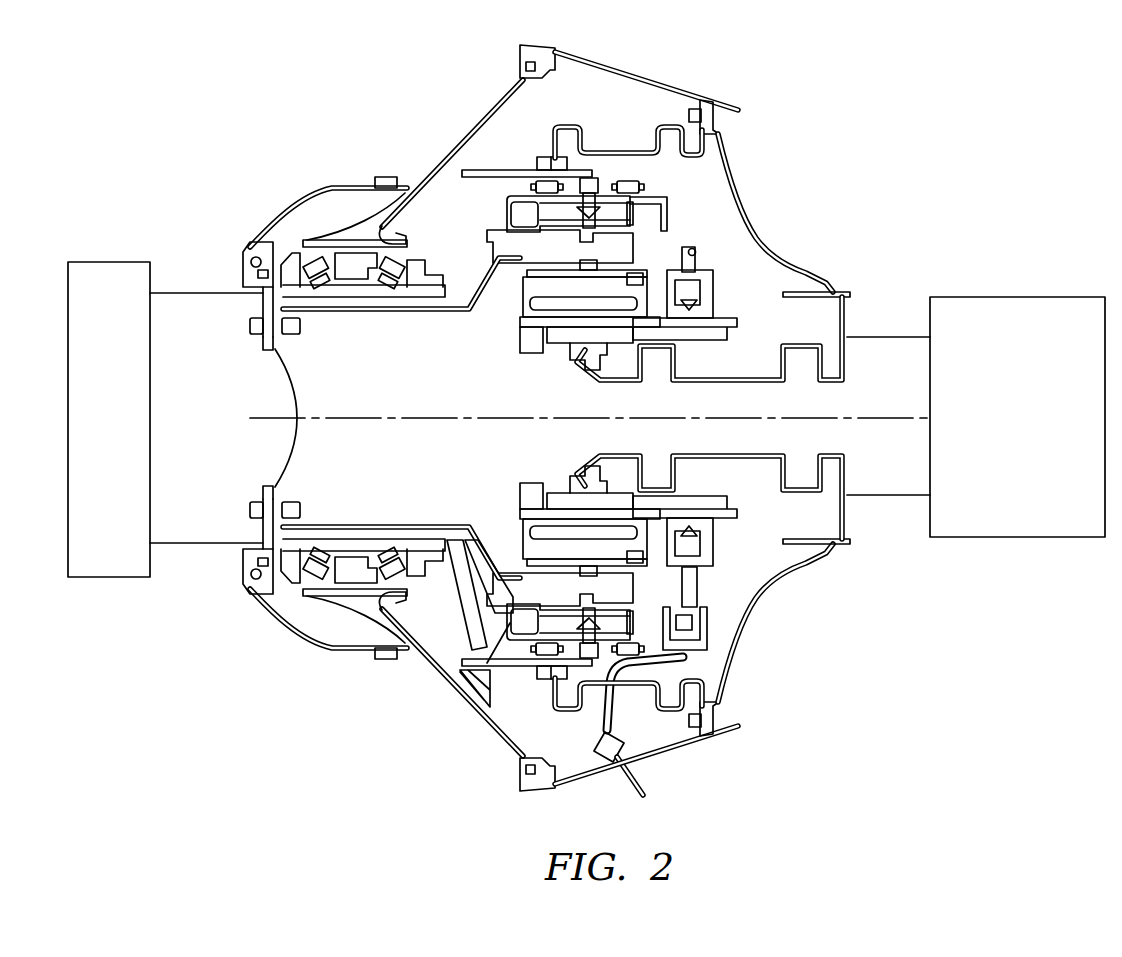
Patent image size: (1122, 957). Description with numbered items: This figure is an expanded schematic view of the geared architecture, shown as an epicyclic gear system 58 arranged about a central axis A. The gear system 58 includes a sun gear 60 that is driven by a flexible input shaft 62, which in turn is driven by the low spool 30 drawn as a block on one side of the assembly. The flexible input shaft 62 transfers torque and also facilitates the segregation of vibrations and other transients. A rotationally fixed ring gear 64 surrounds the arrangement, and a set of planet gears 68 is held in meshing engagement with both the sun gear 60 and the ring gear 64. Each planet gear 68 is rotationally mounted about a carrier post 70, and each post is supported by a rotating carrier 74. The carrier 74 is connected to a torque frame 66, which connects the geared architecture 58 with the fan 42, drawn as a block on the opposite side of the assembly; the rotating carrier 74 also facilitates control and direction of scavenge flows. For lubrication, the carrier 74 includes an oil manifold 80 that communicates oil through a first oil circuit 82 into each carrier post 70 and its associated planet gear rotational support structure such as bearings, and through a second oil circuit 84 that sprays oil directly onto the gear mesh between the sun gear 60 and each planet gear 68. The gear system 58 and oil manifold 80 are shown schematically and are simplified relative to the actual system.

The low spool 30 is at (1034, 437).
The fan 42 is at (120, 429).
The epicyclic gear system 58 is at (871, 149).
The sun gear 60 is at (560, 505).
The flexible input shaft 62 is at (742, 382).
The ring gear 64 is at (636, 204).
The torque frame 66 is at (438, 310).
The planet gear 68 is at (545, 512).
The carrier post 70 is at (512, 566).
The rotating carrier 74 is at (472, 678).
The oil manifold 80 is at (741, 540).
The first oil circuit 82 is at (647, 530).
The second oil circuit 84 is at (653, 316).
The rotation axis A is at (880, 410).